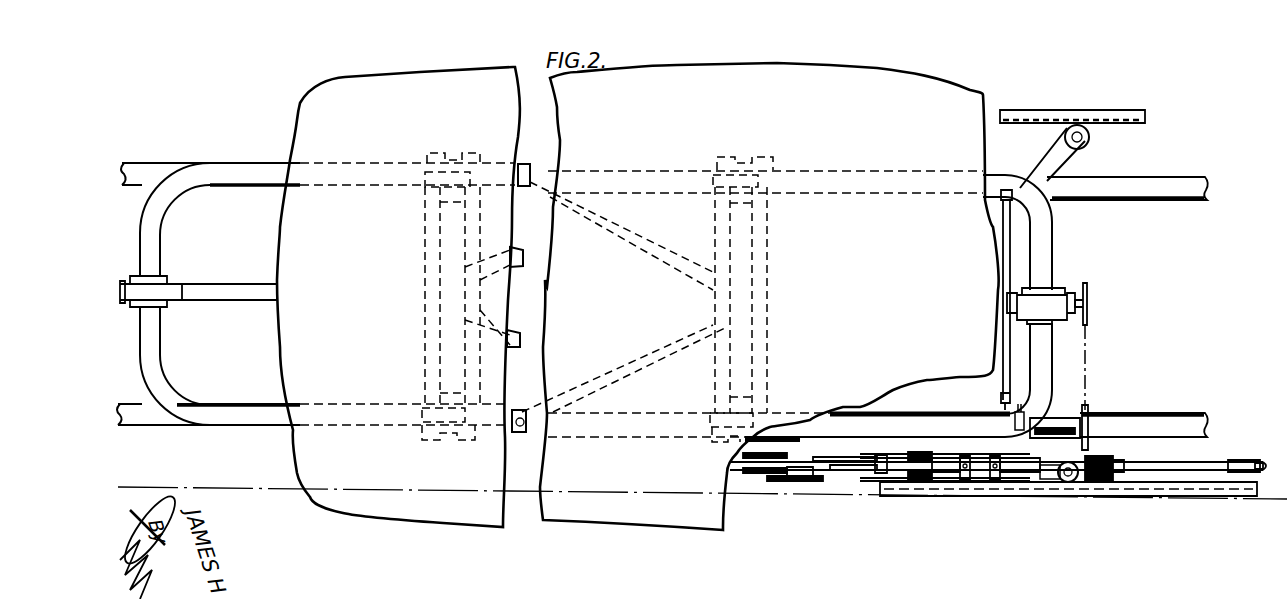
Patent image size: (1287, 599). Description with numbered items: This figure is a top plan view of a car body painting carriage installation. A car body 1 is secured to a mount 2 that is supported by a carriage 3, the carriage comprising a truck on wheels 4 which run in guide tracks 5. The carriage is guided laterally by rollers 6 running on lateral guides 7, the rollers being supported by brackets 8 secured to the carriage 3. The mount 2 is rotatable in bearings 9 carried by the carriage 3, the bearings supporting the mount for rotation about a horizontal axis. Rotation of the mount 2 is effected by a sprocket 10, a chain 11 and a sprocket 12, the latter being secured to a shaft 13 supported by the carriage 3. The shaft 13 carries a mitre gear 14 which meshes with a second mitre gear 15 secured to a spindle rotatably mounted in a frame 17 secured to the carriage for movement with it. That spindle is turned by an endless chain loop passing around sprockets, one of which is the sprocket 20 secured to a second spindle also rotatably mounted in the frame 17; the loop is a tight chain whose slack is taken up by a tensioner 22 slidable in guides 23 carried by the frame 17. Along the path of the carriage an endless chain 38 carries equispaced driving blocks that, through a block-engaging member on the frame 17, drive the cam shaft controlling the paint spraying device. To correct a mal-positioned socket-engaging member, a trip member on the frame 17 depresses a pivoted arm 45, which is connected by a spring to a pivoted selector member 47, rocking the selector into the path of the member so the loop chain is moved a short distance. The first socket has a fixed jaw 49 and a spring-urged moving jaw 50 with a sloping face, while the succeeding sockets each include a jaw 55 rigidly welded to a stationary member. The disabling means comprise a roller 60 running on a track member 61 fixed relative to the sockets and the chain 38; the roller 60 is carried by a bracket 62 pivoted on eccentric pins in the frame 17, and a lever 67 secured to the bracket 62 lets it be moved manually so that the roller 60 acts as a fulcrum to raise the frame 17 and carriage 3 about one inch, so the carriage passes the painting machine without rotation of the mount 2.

The car body 1 is at (313, 118).
The mount 2 is at (223, 291).
The carriage 3 is at (265, 172).
The wheels 4 is at (420, 192).
The guide tracks 5 is at (1105, 187).
The rollers 6 is at (1089, 139).
The lateral guides 7 is at (1038, 116).
The brackets 8 is at (1058, 150).
The bearings 9 is at (160, 280).
The sprocket 10 is at (1090, 301).
The chain 11 is at (1088, 334).
The sprocket 12 is at (1088, 410).
The shaft 13 is at (1043, 427).
The mitre gear 14 is at (1021, 417).
The second mitre gear 15 is at (1083, 456).
The frame 17 is at (955, 453).
The sprocket 20 is at (912, 473).
The tensioner 22 is at (985, 460).
The guides 23 is at (990, 478).
The endless chain 38 is at (513, 495).
The pivoted arm 45 is at (752, 478).
The selector member 47 is at (800, 482).
The fixed jaw 49 is at (879, 470).
The moving jaw 50 is at (833, 470).
The jaw portion 55 is at (1228, 466).
The roller 60 is at (1125, 470).
The track member 61 is at (1258, 468).
The bracket 62 is at (1113, 462).
The lever 67 is at (1013, 473).